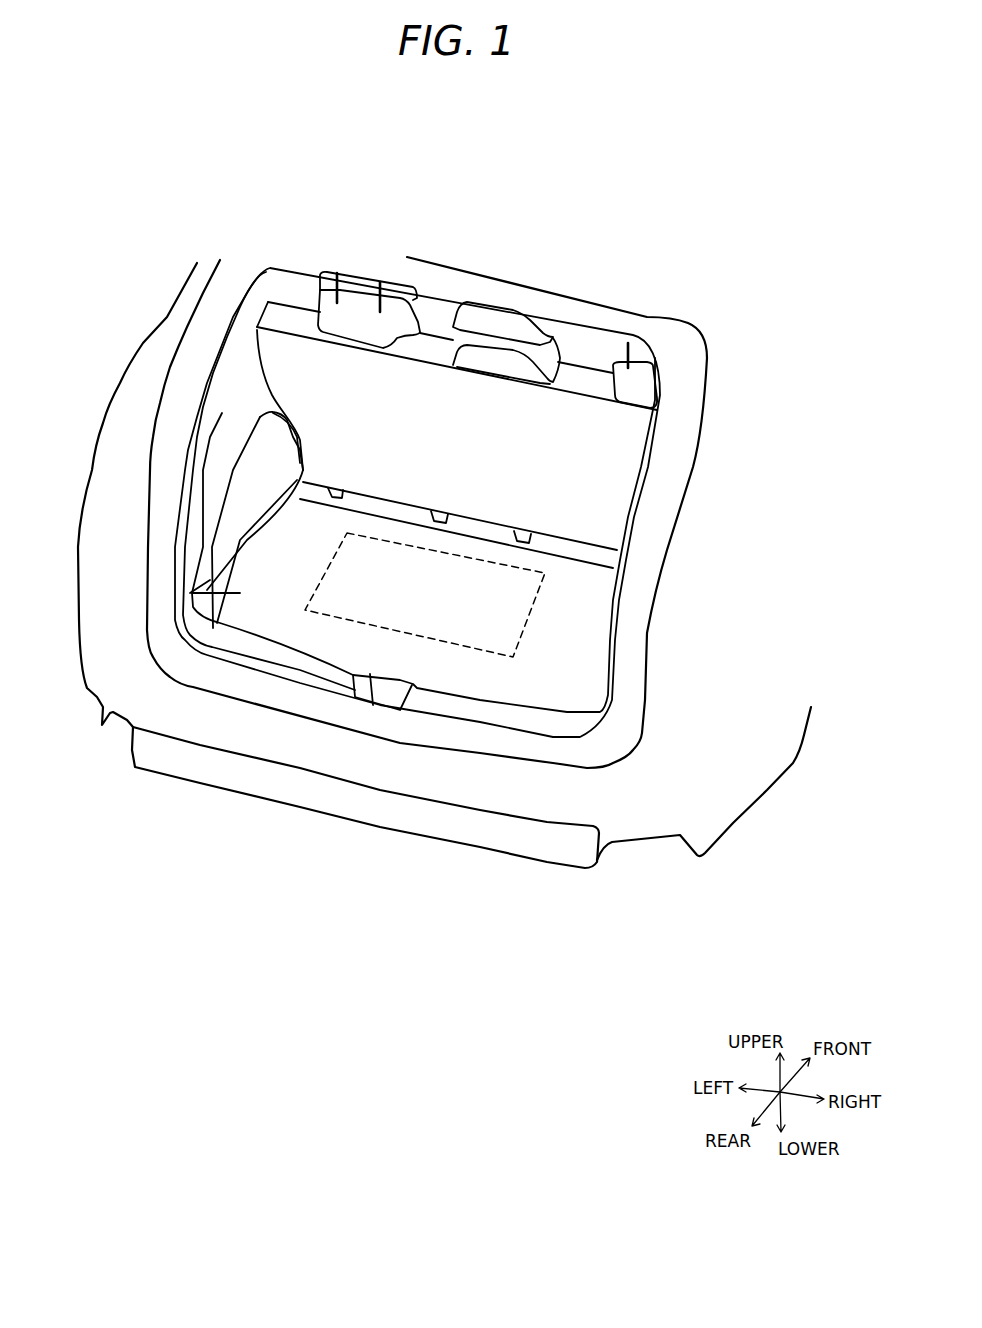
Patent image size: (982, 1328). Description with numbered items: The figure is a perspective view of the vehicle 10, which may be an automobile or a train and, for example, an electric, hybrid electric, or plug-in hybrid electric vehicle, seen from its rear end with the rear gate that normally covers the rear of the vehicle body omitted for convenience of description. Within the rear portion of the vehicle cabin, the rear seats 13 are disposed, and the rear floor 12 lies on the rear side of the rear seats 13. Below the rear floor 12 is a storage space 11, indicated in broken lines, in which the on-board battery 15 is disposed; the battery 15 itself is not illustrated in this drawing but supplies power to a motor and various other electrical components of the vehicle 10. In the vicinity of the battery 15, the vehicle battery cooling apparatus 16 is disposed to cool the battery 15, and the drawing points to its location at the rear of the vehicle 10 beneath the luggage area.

The vehicle 10 is at (383, 198).
The storage space 11 is at (554, 546).
The rear floor 12 is at (300, 552).
The rear seats 13 is at (278, 357).
The battery 15 is at (545, 573).
The vehicle battery cooling apparatus 16 is at (344, 840).